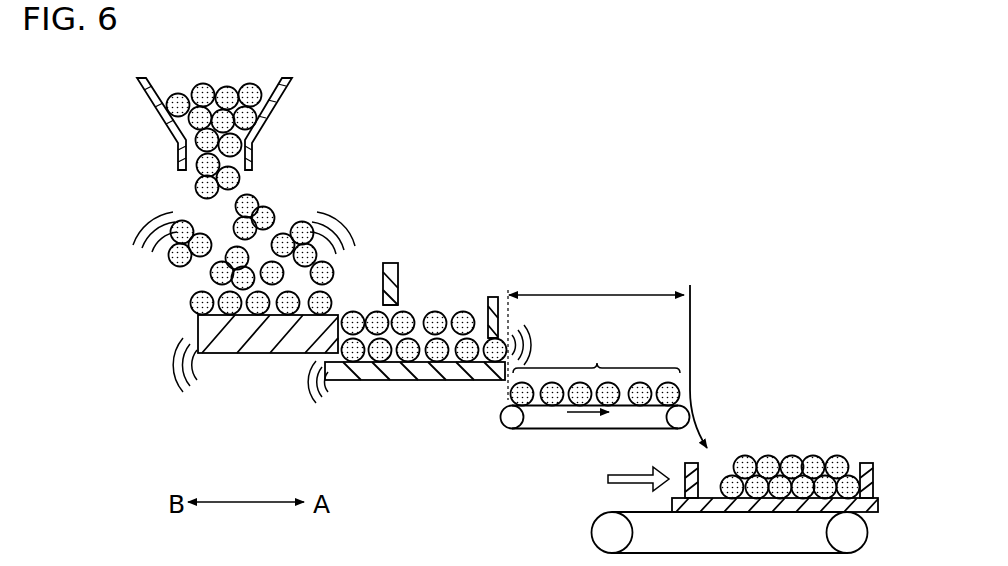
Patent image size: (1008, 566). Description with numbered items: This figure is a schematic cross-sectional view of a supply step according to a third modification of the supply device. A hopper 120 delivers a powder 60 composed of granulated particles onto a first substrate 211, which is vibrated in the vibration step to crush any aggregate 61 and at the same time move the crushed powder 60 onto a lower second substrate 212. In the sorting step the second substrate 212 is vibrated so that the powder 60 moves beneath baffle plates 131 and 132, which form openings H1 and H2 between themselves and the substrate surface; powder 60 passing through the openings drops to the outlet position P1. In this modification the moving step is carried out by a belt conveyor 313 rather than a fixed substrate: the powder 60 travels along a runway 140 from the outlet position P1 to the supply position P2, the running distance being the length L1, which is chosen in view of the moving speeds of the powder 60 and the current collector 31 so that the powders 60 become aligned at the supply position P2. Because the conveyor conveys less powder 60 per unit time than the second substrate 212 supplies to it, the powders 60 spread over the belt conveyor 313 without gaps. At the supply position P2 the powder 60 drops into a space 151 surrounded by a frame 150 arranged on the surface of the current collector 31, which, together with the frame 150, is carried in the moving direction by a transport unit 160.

The powder 60 is at (204, 90).
The aggregate 61 is at (270, 190).
The hopper 120 is at (158, 107).
The baffle plate 131 is at (390, 260).
The baffle plate 132 is at (492, 295).
The first substrate 211 is at (253, 354).
The second substrate 212 is at (400, 381).
The runway 140 is at (596, 374).
The belt conveyor 313 is at (533, 429).
The space 151 is at (708, 487).
The frame 150 is at (863, 461).
The current collector 31 is at (877, 502).
The transport unit 160 is at (597, 531).
The opening H1 is at (403, 310).
The opening H2 is at (484, 340).
The outlet position P1 is at (508, 282).
The supply position P2 is at (685, 281).
The length of the runway L1 is at (596, 279).